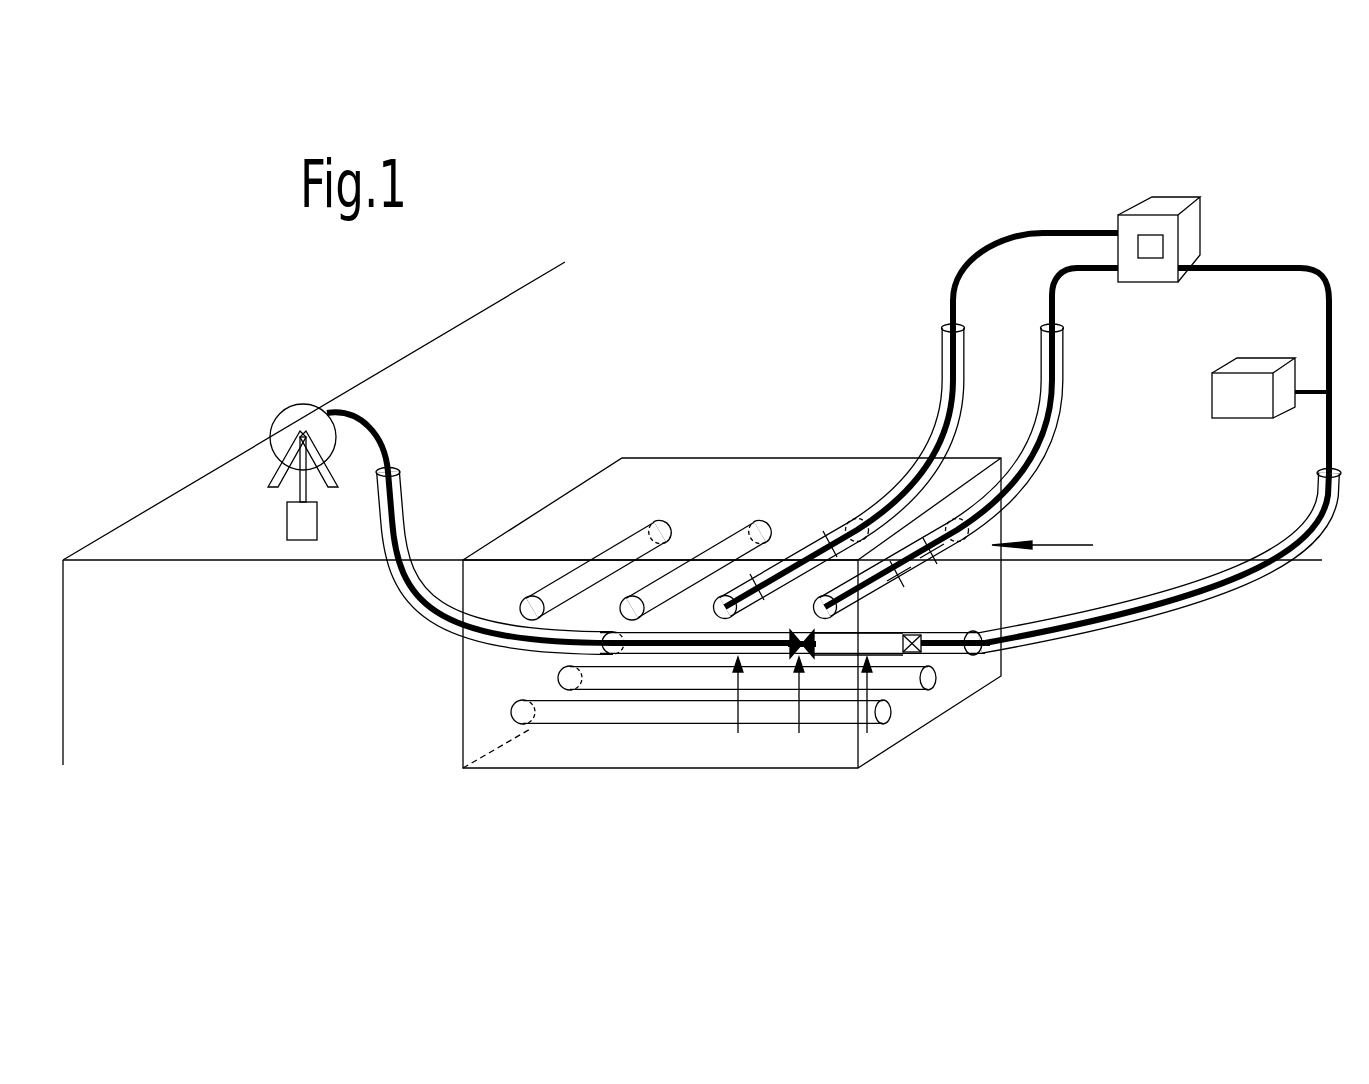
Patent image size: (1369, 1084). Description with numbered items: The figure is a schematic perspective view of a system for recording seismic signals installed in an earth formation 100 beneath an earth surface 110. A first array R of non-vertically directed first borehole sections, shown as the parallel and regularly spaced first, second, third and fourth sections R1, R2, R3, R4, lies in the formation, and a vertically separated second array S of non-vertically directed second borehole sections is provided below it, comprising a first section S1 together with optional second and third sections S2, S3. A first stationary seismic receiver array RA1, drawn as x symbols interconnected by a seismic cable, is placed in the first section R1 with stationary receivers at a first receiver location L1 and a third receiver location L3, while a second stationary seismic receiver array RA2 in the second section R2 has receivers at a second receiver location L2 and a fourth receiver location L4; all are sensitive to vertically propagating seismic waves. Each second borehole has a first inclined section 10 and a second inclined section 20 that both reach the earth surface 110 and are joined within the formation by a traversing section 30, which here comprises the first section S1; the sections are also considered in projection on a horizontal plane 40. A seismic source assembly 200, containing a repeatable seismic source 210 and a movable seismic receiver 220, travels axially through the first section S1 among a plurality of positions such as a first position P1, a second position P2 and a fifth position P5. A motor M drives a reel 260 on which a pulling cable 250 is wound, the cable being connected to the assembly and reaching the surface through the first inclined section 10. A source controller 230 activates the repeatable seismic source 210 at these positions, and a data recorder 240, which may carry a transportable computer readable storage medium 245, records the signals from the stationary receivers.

The first inclined section 10 is at (392, 591).
The second inclined section 20 is at (1227, 585).
The traversing section 30 is at (674, 650).
The horizontal plane 40 is at (493, 778).
The earth formation 100 is at (313, 705).
The earth surface 110 is at (238, 566).
The seismic source assembly 200 is at (882, 657).
The repeatable seismic source 210 is at (813, 661).
The movable seismic receiver 220 is at (917, 635).
The source controller 230 is at (1227, 392).
The data recorder 240 is at (1182, 259).
The computer readable storage medium 245 is at (1152, 250).
The pulling cable 250 is at (403, 520).
The reel 260 is at (302, 417).
The motor M is at (296, 525).
The first array R is at (1056, 542).
The first non-vertically directed first borehole section R1 is at (957, 480).
The second non-vertically directed first borehole section R2 is at (792, 548).
The third non-vertically directed first borehole section R3 is at (707, 546).
The fourth non-vertically directed first borehole section R4 is at (612, 550).
The first stationary seismic receiver array RA1 is at (816, 596).
The second stationary seismic receiver array RA2 is at (715, 594).
The first receiver location L1 is at (945, 552).
The second receiver location L2 is at (828, 538).
The third receiver location L3 is at (905, 575).
The fourth receiver location L4 is at (788, 560).
The second array S is at (747, 757).
The first non-vertically directed second borehole section S1 is at (950, 654).
The second non-vertically directed second borehole section S2 is at (907, 688).
The third non-vertically directed second borehole section S3 is at (847, 720).
The first position P1 is at (867, 733).
The second position P2 is at (799, 730).
The fifth position P5 is at (738, 732).